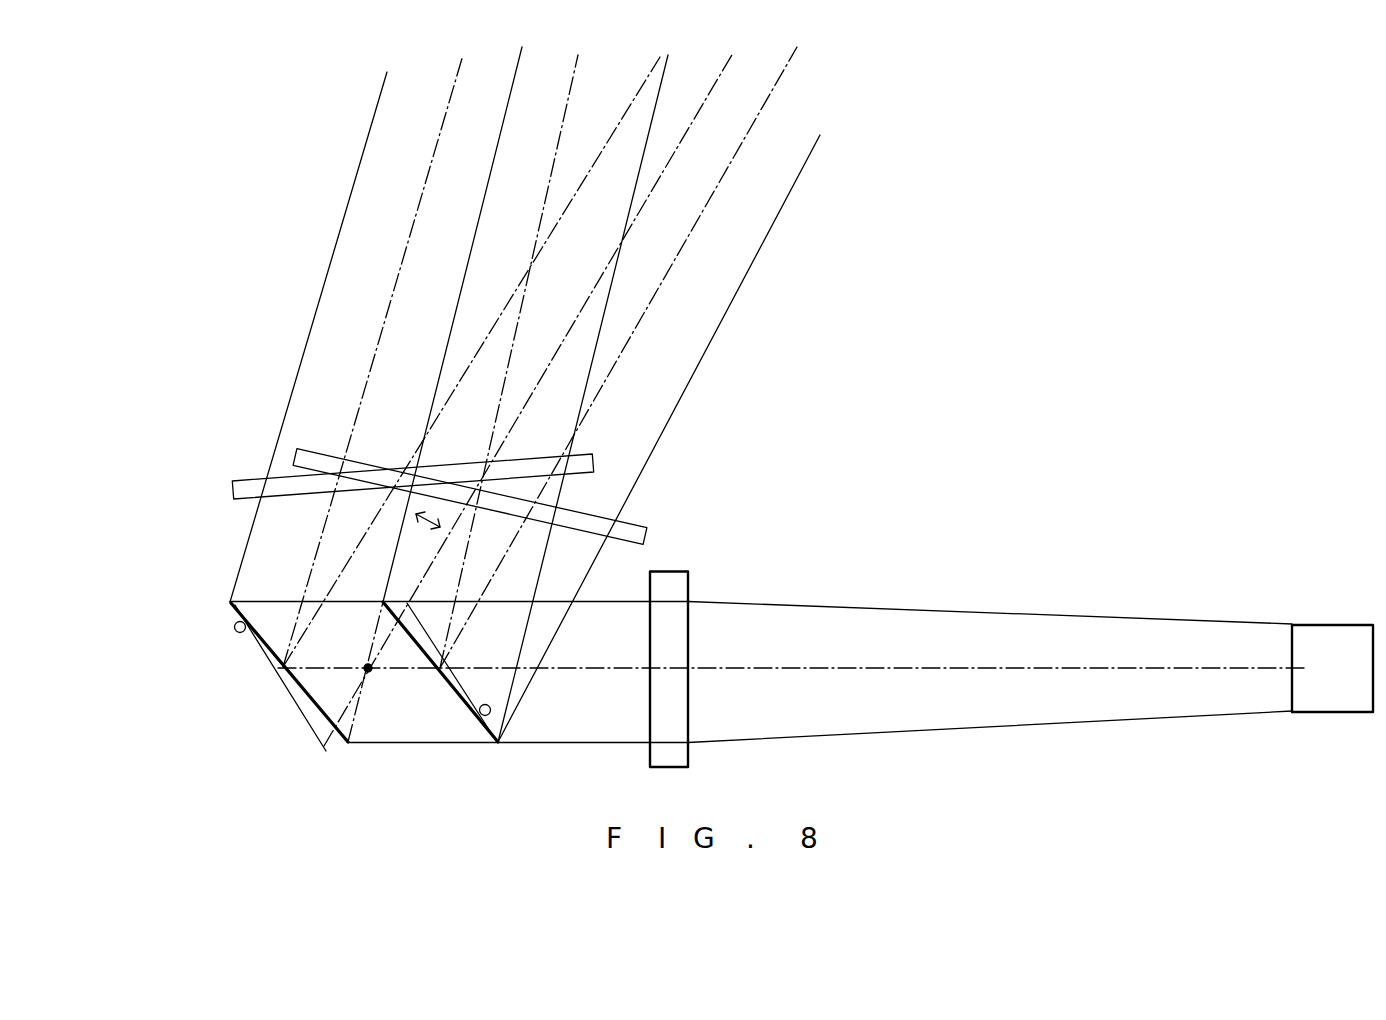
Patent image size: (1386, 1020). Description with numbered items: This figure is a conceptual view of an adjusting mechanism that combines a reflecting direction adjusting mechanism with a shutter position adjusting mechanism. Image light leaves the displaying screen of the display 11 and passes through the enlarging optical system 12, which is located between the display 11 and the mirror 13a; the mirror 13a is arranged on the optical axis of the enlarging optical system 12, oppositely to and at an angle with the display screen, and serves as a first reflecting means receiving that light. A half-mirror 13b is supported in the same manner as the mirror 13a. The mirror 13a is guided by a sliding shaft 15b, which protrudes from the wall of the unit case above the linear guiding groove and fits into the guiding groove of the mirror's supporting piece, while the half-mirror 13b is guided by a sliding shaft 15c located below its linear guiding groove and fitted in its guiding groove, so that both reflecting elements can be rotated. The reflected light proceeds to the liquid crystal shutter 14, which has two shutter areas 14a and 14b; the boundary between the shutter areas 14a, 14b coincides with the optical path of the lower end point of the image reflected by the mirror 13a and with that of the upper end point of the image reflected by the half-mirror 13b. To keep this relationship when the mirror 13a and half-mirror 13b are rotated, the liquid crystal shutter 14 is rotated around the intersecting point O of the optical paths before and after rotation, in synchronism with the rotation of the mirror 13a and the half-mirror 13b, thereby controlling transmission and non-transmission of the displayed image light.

The display 11 is at (1337, 623).
The enlarging optical system 12 is at (673, 571).
The mirror 13a is at (302, 702).
The half-mirror 13b is at (413, 638).
The liquid crystal shutter 14 is at (409, 385).
The shutter area 14a is at (287, 483).
The shutter area 14b is at (532, 470).
The sliding shaft 15b is at (234, 629).
The sliding shaft 15c is at (491, 708).
The intersecting point O is at (369, 670).